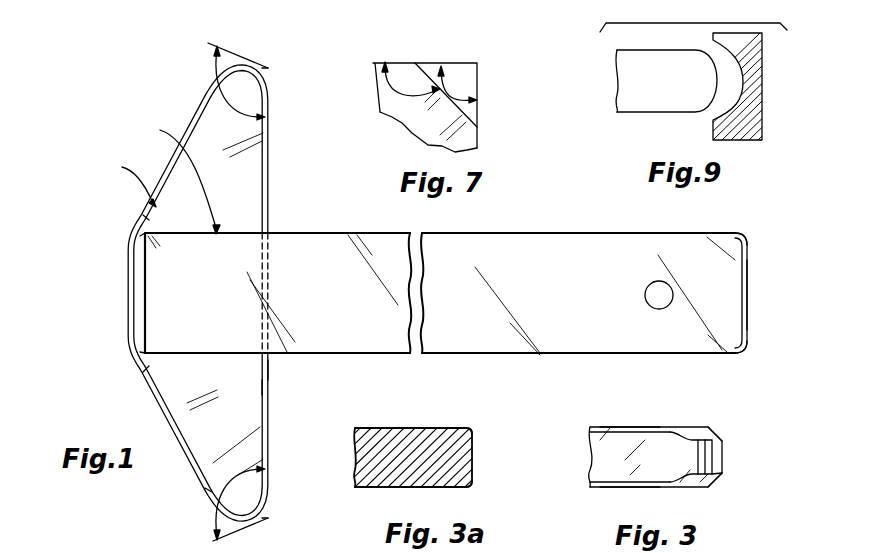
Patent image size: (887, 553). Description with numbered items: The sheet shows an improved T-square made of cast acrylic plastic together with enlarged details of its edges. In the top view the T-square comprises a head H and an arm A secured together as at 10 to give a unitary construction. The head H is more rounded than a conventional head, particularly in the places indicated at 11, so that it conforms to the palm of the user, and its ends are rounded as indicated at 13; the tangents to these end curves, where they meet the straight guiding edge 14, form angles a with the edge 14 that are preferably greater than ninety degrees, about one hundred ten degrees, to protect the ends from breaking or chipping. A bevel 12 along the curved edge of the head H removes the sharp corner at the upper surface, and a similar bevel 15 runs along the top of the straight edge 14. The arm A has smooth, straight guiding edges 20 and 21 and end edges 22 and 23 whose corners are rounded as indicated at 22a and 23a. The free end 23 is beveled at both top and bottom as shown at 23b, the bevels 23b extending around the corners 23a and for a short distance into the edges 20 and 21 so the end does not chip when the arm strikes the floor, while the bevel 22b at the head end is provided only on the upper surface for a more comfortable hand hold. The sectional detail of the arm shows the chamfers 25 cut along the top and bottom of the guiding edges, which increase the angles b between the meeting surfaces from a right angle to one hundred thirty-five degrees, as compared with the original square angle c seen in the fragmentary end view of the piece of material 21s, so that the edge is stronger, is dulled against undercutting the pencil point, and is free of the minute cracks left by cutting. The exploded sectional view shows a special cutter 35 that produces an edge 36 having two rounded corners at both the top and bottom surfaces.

In FIG. 1, the securing joint 10 is at (182, 398).
In FIG. 1, the rounded places of head 11 is at (140, 222).
In FIG. 1, the bevel 12 is at (210, 487).
In FIG. 1, the rounded ends of head 13 is at (270, 67).
In FIG. 1, the straight guiding edge 14 is at (270, 376).
In FIG. 1, the bevel 15 is at (266, 388).
In FIG. 1, the guiding edge of arm 20 is at (328, 233).
In FIG. 1, the guiding edge of arm 21 is at (375, 355).
In FIG. 3A, the guiding edge of arm 21 is at (473, 455).
In FIG. 7, the plate corner section 21s is at (479, 61).
In FIG. 1, the end edge of arm 22 is at (140, 292).
In FIG. 1, the rounded corners 22a is at (138, 236).
In FIG. 1, the bevel 22b is at (143, 317).
In FIG. 1, the end edge of arm 23 is at (748, 270).
In FIG. 3, the end edge of arm 23 is at (726, 456).
In FIG. 1, the rounded corners 23a is at (742, 236).
In FIG. 3, the rounded corners 23a is at (722, 470).
In FIG. 1, the bevel 23b is at (744, 312).
In FIG. 3, the bevel 23b is at (700, 430).
In FIG. 1, the chamfer 25 is at (545, 233).
In FIG. 3A, the chamfer 25 is at (471, 430).
In FIG. 3, the chamfer 25 is at (623, 427).
In FIG. 9, the special cutter 35 is at (758, 110).
In FIG. 9, the edge having two rounded corners 36 is at (718, 78).
In FIG. 1, the angle a is at (224, 106).
In FIG. 1, the arm A is at (182, 177).
In FIG. 1, the head H is at (131, 182).
In FIG. 7, the angle b is at (385, 96).
In FIG. 7, the angle c is at (456, 63).